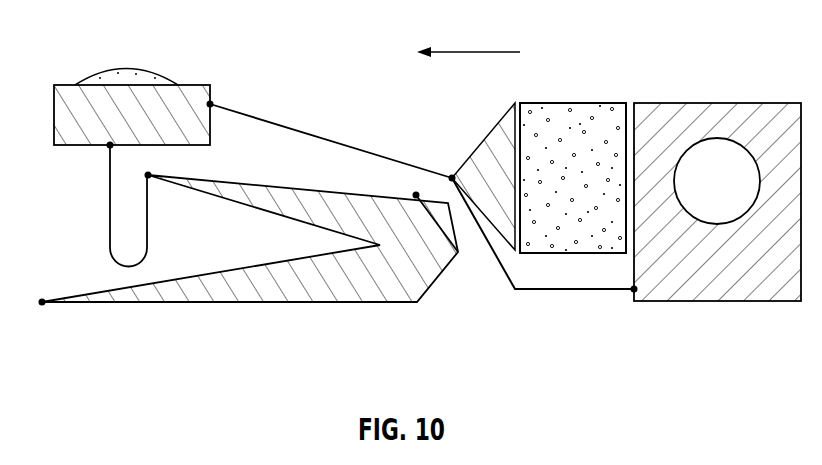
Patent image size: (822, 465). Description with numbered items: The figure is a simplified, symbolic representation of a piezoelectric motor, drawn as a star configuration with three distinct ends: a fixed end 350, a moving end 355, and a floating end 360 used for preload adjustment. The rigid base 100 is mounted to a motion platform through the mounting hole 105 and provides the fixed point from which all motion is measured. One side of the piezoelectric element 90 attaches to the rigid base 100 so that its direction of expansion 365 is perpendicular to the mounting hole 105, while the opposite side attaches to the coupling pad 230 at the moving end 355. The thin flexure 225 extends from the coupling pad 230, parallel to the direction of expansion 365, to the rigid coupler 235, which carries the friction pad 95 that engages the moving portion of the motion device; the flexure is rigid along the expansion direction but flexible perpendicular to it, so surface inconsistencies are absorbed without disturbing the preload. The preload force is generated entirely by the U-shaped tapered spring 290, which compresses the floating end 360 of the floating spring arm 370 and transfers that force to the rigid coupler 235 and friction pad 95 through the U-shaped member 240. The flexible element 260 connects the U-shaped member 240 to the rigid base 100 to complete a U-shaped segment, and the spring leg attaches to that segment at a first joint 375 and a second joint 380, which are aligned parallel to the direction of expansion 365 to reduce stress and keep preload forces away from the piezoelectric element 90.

The piezoelectric element 90 is at (585, 115).
The friction pad 95 is at (127, 68).
The rigid base 100 is at (775, 118).
The mounting hole 105 is at (680, 193).
The thin flexure 225 is at (305, 130).
The coupling pad 230 is at (493, 140).
The rigid coupler 235 is at (197, 124).
The U-shaped member 240 is at (108, 205).
The flexible element 260 is at (556, 291).
The U-shaped tapered spring 290 is at (455, 296).
The fixed end 350 is at (634, 290).
The moving end 355 is at (452, 178).
The floating end 360 is at (42, 303).
The direction of expansion 365 is at (478, 52).
The floating spring arm 370 is at (210, 290).
The first joint 375 is at (149, 177).
The second joint 380 is at (416, 195).